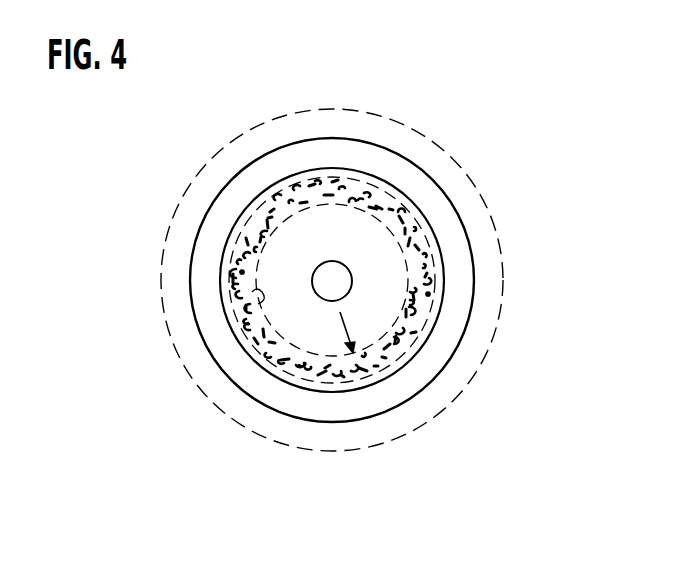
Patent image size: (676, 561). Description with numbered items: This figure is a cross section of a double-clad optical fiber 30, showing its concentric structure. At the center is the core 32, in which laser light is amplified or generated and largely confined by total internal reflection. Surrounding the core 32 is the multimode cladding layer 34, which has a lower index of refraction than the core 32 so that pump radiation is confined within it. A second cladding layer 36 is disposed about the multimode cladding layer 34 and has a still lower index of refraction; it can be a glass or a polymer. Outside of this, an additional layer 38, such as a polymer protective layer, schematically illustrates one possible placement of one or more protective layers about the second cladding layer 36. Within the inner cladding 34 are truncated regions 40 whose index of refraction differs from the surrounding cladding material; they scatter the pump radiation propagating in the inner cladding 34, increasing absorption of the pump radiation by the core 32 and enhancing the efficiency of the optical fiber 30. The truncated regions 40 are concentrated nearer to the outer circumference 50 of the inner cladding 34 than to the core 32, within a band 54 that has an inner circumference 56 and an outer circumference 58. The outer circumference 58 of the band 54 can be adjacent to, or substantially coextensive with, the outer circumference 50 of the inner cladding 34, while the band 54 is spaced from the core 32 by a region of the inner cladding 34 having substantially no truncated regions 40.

The optical fiber 30 is at (175, 176).
The core 32 is at (329, 277).
The multimode cladding layer 34 is at (380, 247).
The second cladding layer 36 is at (438, 357).
The additional layer 38 is at (440, 404).
The truncated regions 40 is at (240, 272).
The outer circumference of the inner cladding 50 is at (293, 423).
The band 54 is at (360, 383).
The inner circumference of the band 56 is at (258, 304).
The outer circumference of the band 58 is at (400, 198).